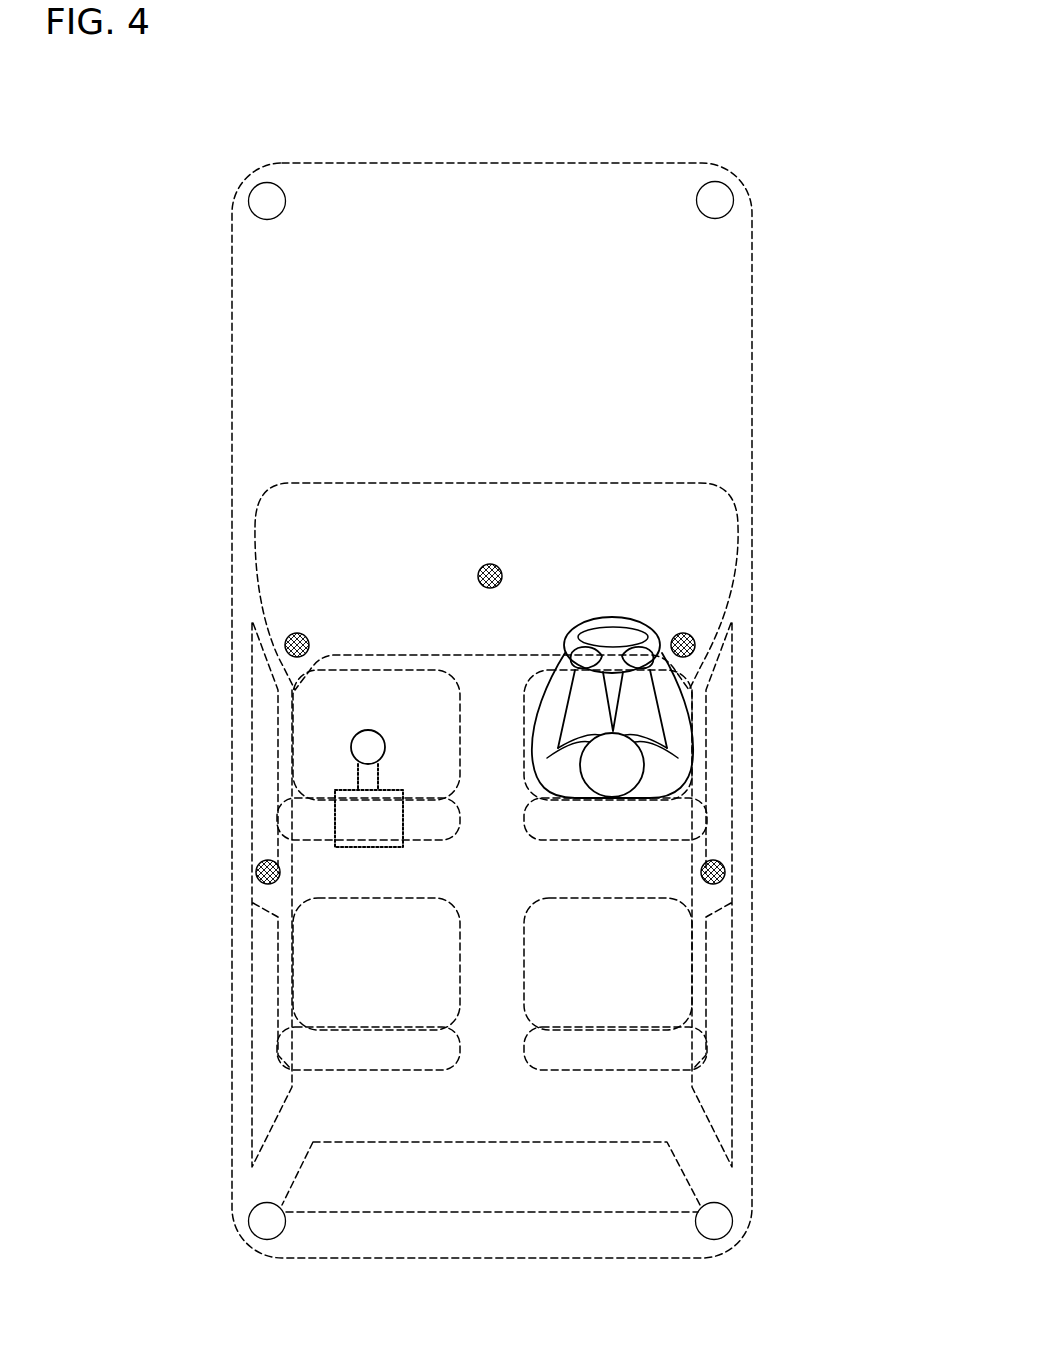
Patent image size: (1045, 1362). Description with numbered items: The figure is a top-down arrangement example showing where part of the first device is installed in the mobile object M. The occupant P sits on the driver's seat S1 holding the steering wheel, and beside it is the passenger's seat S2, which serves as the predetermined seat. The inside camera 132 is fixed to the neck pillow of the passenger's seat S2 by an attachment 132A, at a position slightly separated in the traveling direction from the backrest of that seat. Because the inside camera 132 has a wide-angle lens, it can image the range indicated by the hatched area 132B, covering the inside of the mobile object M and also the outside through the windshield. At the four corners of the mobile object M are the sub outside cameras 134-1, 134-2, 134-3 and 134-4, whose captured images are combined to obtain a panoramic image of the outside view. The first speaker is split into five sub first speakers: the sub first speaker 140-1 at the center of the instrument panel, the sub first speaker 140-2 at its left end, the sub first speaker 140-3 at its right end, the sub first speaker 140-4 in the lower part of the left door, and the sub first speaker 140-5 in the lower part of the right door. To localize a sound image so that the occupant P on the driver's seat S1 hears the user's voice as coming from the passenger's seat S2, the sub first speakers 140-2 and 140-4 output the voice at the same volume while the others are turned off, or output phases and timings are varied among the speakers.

The mobile object M is at (490, 163).
The hatched area 132B is at (859, 311).
The sub outside camera 134-1 is at (253, 188).
The sub outside camera 134-2 is at (757, 162).
The sub outside camera 134-3 is at (258, 1238).
The sub outside camera 134-4 is at (727, 1237).
The sub first speaker 140-1 is at (490, 564).
The sub first speaker 140-2 is at (300, 634).
The sub first speaker 140-3 is at (680, 634).
The sub first speaker 140-4 is at (256, 874).
The sub first speaker 140-5 is at (726, 874).
The inside camera 132 is at (352, 746).
The attachment 132A is at (379, 773).
The driver's seat S1 is at (700, 788).
The passenger's seat S2 is at (280, 786).
The occupant P is at (693, 762).